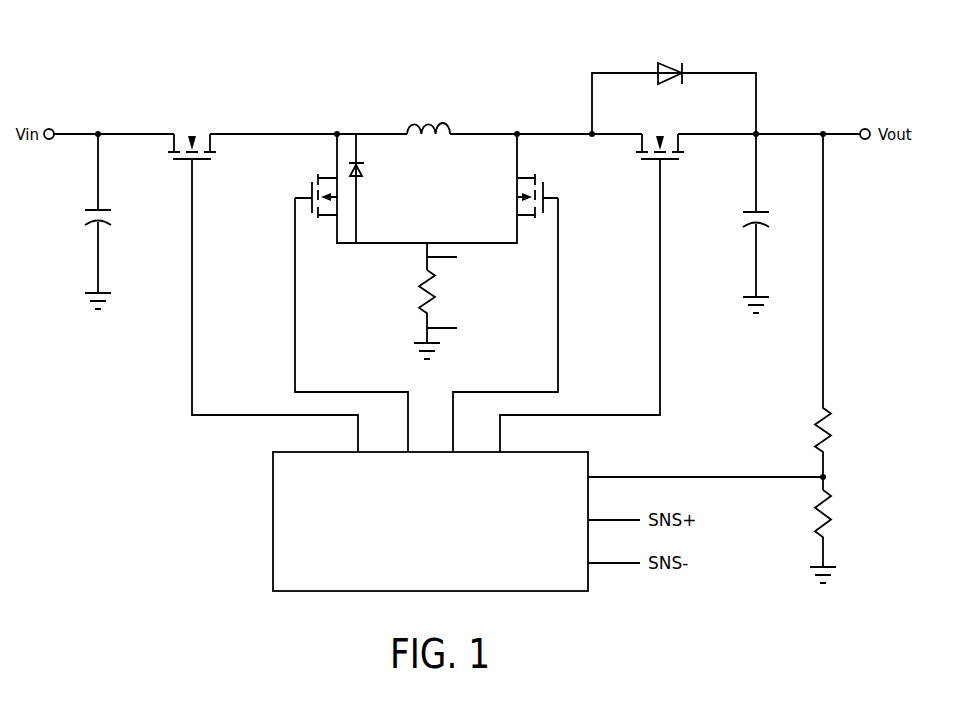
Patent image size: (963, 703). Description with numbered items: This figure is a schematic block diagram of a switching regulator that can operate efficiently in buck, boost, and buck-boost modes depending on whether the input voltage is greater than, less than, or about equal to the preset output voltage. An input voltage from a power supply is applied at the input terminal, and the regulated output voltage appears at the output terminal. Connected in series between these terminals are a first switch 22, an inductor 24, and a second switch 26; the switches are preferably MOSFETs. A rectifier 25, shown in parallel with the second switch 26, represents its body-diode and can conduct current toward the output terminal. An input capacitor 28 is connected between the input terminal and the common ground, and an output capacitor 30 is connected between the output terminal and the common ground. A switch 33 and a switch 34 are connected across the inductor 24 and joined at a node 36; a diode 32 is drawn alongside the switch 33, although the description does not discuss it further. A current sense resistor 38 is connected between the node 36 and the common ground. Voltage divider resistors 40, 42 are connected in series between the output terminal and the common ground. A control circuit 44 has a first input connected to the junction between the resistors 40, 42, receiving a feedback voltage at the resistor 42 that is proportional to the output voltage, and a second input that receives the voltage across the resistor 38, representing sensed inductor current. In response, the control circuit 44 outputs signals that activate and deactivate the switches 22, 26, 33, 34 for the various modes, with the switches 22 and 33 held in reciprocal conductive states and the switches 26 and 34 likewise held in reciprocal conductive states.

The first switch 22 is at (183, 132).
The inductor 24 is at (445, 122).
The rectifier 25 is at (668, 62).
The second switch 26 is at (672, 134).
The input capacitor 28 is at (86, 210).
The output capacitor 30 is at (770, 213).
The diode 32 is at (363, 172).
The switch 33 is at (335, 187).
The switch 34 is at (545, 185).
The node 36 is at (427, 242).
The current sense resistor 38 is at (420, 300).
The voltage divider resistor 40 is at (832, 432).
The voltage divider resistor 42 is at (832, 515).
The control circuit 44 is at (571, 593).